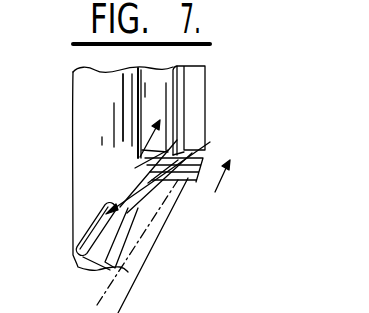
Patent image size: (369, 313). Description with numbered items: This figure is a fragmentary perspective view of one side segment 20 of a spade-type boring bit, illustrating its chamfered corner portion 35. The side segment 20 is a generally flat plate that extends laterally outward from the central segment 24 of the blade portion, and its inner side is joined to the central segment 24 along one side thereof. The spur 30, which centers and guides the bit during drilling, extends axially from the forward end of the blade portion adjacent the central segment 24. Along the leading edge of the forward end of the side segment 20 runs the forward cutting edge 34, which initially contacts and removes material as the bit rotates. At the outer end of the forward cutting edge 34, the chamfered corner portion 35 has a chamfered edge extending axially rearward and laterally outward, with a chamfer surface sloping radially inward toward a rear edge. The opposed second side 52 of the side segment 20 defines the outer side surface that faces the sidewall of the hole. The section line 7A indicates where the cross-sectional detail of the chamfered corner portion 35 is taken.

The side segment 20 is at (157, 108).
The central segment 24 is at (87, 133).
The spur 30 is at (80, 262).
The forward cutting edge 34 is at (132, 208).
The chamfered corner portion 35 is at (211, 155).
The second side 52 is at (206, 91).
The section line 7A- 7A is at (165, 175).